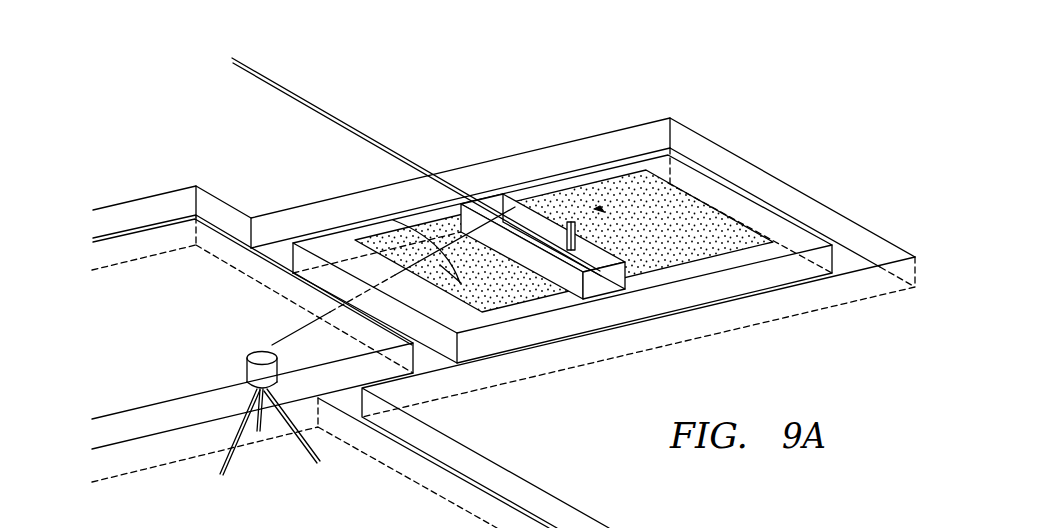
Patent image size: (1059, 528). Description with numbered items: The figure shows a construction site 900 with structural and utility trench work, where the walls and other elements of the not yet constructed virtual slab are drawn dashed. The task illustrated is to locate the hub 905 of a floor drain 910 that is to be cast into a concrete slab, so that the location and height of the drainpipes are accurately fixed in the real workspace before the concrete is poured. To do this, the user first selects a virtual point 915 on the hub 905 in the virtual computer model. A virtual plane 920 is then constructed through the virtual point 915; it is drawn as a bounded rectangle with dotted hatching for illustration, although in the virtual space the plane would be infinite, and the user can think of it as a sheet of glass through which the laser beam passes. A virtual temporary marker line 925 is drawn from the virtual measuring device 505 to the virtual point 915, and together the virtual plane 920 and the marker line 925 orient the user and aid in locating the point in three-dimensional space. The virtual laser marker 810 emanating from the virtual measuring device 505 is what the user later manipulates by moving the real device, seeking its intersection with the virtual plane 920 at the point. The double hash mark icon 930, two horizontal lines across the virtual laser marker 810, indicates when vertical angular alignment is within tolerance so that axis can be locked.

The construction site 900 is at (697, 81).
The hub 905 is at (592, 232).
The floor drain 910 is at (331, 106).
The virtual point 915 is at (570, 221).
The virtual plane 920 is at (735, 228).
The virtual temporary marker line 925 is at (600, 208).
The double hash mark icon 930 is at (393, 220).
The virtual laser marker 810 is at (285, 337).
The virtual measuring device 505 is at (232, 367).